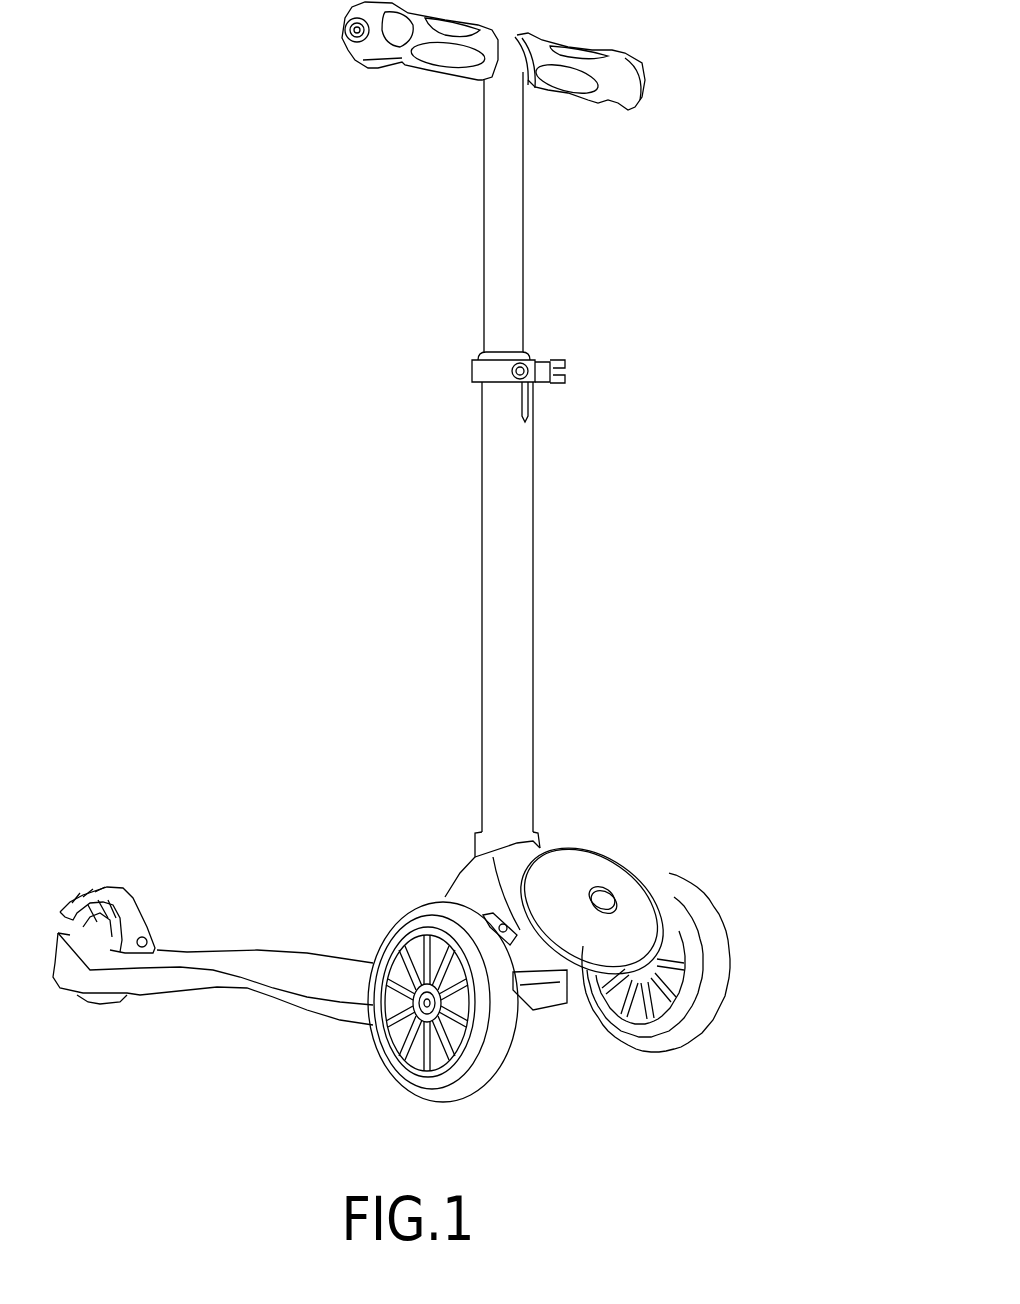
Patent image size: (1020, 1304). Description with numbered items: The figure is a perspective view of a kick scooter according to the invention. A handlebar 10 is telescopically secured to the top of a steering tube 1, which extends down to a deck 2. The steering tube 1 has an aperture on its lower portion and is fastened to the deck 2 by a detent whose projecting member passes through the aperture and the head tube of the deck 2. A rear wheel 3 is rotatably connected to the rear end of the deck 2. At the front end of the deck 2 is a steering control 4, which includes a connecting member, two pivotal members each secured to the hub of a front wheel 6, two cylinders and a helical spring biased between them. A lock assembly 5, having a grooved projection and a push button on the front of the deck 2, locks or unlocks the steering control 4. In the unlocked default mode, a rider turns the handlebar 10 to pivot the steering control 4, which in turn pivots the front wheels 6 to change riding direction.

The steering tube 1 is at (522, 703).
The deck 2 is at (245, 955).
The rear wheel 3 is at (81, 914).
The steering control 4 is at (572, 993).
The lock assembly 5 is at (598, 885).
The front wheel 6 is at (438, 1093).
The handlebar 10 is at (588, 88).